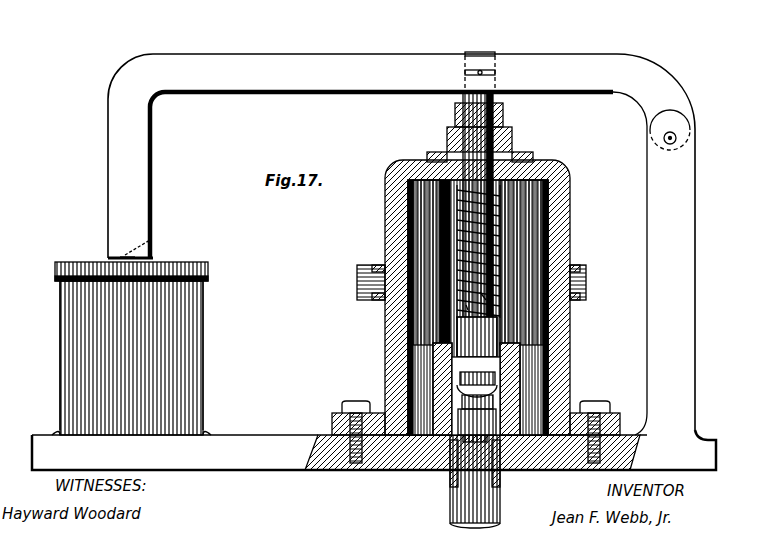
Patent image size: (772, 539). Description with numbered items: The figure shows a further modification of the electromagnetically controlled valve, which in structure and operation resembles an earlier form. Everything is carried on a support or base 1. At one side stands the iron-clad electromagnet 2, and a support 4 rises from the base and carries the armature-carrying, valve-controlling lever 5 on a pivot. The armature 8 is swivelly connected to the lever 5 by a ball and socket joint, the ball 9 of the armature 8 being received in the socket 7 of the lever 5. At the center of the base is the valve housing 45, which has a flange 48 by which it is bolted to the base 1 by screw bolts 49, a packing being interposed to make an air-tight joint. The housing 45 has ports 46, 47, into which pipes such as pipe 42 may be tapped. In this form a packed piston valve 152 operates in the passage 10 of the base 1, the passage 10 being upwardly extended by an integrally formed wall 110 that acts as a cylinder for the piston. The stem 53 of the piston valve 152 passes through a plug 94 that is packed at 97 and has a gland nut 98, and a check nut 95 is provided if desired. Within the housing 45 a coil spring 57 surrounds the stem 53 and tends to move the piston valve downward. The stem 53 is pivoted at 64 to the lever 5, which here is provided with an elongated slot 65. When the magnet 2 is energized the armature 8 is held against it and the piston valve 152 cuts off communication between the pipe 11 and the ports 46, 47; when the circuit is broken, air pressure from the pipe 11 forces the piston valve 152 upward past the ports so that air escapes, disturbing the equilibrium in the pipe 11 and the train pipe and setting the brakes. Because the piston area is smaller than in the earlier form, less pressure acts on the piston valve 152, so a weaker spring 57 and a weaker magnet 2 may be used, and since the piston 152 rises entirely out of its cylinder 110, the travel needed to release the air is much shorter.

The base 1 is at (374, 443).
The electromagnet 2 is at (125, 358).
The support 4 is at (670, 200).
The lever 5 is at (401, 244).
The socket 7 is at (130, 241).
The armature 8 is at (70, 264).
The ball 9 is at (150, 247).
The passage 10 is at (450, 440).
The pipe 11 is at (500, 504).
The pipe 42 is at (357, 285).
The valve housing 45 is at (385, 232).
The port 46 is at (573, 258).
The port 47 is at (385, 266).
The flange 48 is at (332, 418).
The screw bolts 49 is at (345, 401).
The valve stem 53 is at (498, 262).
The coil spring 57 is at (498, 292).
The pivot 64 is at (488, 68).
The elongated slot 65 is at (498, 73).
The plug 94 is at (534, 160).
The check nut 95 is at (431, 152).
The packing 97 is at (514, 146).
The gland nut 98 is at (503, 114).
The wall 110 is at (433, 364).
The packed piston valve 152 is at (497, 330).